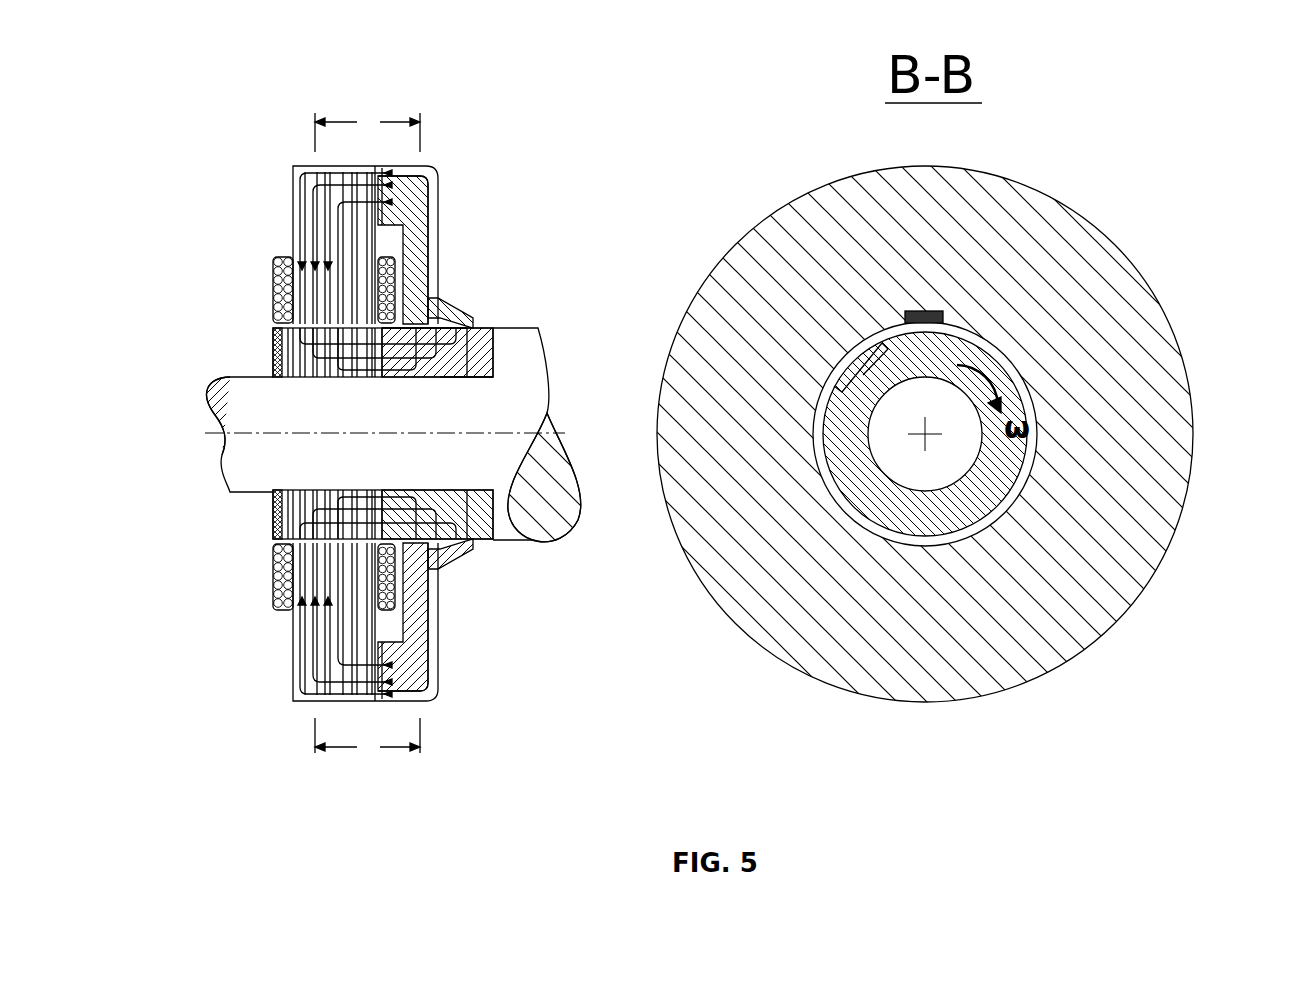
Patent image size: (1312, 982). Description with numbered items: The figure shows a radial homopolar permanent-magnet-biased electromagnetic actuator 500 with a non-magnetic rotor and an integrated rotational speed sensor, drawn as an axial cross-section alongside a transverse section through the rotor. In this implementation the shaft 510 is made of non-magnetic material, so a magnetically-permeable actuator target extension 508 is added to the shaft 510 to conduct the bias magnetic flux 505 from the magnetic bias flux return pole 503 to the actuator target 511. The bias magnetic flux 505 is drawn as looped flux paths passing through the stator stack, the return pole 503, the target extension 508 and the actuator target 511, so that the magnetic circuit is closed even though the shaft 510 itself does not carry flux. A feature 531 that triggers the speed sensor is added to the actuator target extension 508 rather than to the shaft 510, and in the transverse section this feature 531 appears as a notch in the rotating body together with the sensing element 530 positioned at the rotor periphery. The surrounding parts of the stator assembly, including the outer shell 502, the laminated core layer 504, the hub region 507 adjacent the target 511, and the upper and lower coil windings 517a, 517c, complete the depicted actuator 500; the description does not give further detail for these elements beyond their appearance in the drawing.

The motor assembly 500 is at (230, 112).
The housing shell 502 is at (396, 166).
The magnetic bias flux return pole 503 is at (436, 235).
The stator core lamination 504 is at (300, 188).
The bias magnetic flux 505 is at (300, 238).
The rotor 507 is at (472, 328).
The actuator target extension 508 is at (480, 543).
The shaft 510 is at (548, 355).
The actuator target 511 is at (282, 346).
The coil 517a is at (272, 290).
The coil 517c is at (272, 582).
The magnet 530 is at (438, 300).
The feature triggering the speed sensor 531 is at (450, 380).